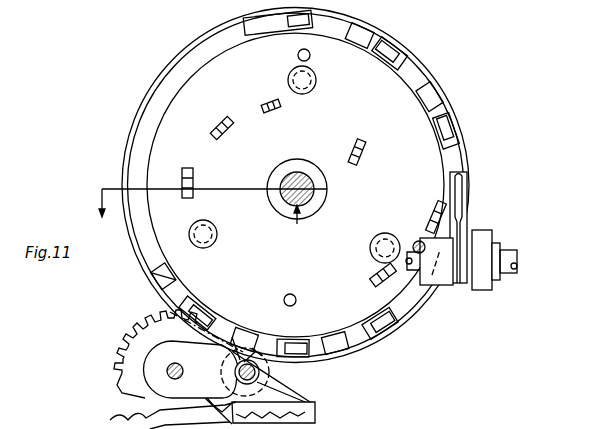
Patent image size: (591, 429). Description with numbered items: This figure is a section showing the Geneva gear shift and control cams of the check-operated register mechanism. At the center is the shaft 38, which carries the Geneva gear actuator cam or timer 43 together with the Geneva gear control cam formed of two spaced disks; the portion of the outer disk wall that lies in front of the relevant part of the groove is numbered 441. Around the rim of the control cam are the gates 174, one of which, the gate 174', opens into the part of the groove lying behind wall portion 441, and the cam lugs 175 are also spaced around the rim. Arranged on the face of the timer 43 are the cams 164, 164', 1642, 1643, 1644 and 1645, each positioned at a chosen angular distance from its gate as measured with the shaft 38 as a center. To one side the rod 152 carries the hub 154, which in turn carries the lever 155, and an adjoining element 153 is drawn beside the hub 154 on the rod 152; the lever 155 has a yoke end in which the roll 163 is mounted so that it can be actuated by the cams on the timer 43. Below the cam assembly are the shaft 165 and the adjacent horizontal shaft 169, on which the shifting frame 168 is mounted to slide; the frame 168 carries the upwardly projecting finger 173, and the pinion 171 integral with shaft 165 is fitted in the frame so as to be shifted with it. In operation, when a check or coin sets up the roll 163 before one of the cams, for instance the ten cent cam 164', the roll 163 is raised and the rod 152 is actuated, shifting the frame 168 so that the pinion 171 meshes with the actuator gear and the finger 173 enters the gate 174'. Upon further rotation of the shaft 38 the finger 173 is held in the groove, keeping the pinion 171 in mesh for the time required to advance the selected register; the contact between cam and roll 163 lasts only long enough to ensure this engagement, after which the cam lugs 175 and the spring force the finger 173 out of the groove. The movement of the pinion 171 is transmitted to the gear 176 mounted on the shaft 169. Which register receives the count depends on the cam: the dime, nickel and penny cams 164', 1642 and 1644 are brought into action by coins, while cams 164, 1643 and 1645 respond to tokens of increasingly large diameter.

The portion of wall 44' 441 is at (138, 152).
The Geneva gear actuator cam or timer 43 is at (360, 108).
The shaft 38 is at (327, 189).
The gates 174 is at (344, 192).
The cam lugs 175 is at (300, 26).
The gate 174' is at (197, 306).
The cam 164 is at (419, 217).
The ten cent cam 164' is at (363, 273).
The cam 1642 is at (192, 168).
The cam 1643 is at (214, 128).
The cam 1644 is at (262, 107).
The cam 1645 is at (358, 142).
The lever 155 is at (466, 222).
The roll 163 is at (462, 194).
The hub 154 is at (438, 282).
The block 153 is at (490, 287).
The rod 152 is at (510, 257).
The gear 176 is at (137, 375).
The shaft 169 is at (183, 372).
The shaft 165 is at (260, 371).
The pinion 171 is at (240, 394).
The shifting frame 168 is at (308, 402).
The finger 173 is at (252, 348).